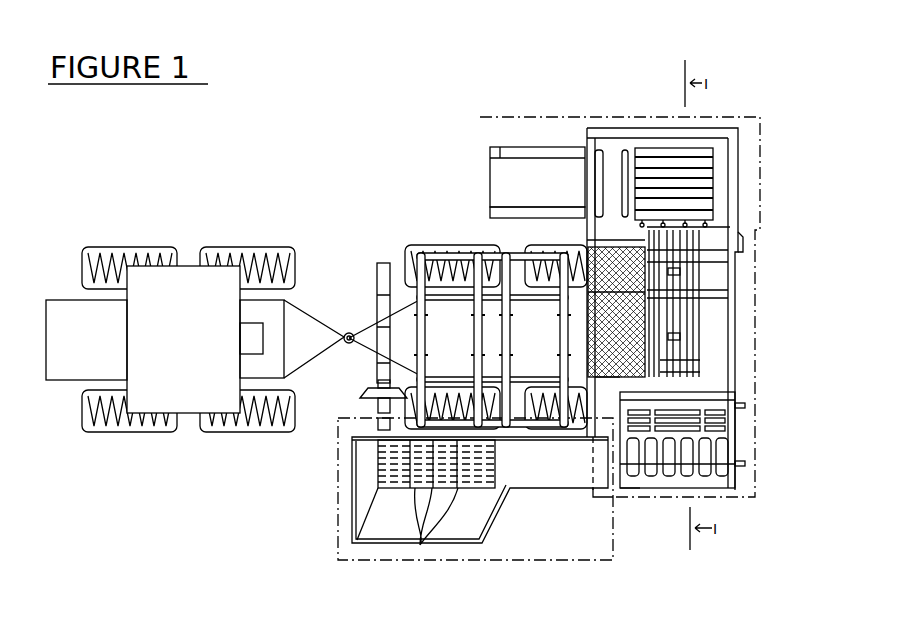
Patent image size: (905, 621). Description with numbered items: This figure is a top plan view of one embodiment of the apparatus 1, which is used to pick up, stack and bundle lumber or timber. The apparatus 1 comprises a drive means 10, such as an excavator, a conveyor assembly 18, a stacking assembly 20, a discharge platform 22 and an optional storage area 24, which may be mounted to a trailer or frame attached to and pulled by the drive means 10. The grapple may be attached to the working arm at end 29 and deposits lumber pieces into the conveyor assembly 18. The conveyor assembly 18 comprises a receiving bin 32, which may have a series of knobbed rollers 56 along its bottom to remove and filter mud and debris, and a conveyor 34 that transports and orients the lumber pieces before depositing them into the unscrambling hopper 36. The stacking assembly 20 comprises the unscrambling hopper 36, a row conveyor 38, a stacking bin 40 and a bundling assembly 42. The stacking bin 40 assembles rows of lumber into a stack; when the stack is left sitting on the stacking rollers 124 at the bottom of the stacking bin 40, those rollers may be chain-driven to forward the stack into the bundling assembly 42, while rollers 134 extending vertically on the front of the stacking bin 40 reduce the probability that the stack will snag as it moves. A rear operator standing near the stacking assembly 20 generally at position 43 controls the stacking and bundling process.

The apparatus 1 is at (356, 141).
The drive means 10 is at (184, 236).
The conveyor assembly 18 is at (502, 572).
The stacking assembly 20 is at (778, 268).
The discharge platform 22 is at (548, 183).
The storage area 24 is at (493, 320).
The end 29 is at (289, 612).
The receiving bin 32 is at (370, 478).
The conveyor 34 is at (495, 467).
The unscrambling hopper 36 is at (737, 476).
The row conveyor 38 is at (705, 312).
The stacking bin 40 is at (713, 153).
The bundling assembly 42 is at (588, 124).
The rear operator position 43 is at (633, 489).
The knobbed rollers 56 is at (420, 545).
The stacking rollers 124 is at (623, 150).
The rollers 134 is at (706, 218).